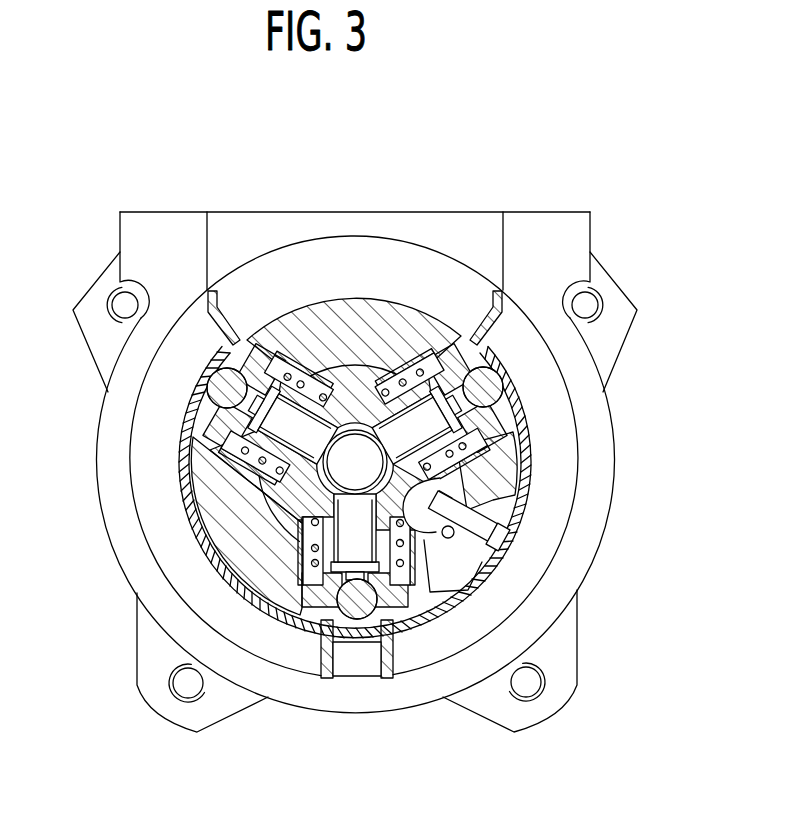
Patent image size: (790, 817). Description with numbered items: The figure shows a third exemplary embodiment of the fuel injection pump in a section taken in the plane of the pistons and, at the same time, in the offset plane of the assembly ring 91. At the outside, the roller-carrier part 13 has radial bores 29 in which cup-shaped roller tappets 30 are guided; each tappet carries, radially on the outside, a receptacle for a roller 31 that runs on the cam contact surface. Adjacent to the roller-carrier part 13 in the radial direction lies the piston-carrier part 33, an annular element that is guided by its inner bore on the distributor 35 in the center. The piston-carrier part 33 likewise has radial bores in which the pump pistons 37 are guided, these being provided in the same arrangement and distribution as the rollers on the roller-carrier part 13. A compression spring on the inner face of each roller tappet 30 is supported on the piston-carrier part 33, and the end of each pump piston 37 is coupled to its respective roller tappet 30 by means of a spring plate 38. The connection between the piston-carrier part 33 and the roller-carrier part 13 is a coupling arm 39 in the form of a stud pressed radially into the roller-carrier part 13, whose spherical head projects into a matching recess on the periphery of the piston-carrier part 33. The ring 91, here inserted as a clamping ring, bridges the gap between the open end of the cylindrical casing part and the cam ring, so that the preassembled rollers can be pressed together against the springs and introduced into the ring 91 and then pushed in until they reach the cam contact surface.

The roller-carrier part 13 is at (200, 468).
The radial bores 29 is at (238, 342).
The cup-shaped roller tappets 30 is at (312, 600).
The roller 31 is at (503, 391).
The piston-carrier part 33 is at (355, 387).
The distributor 35 is at (343, 470).
The pump pistons 37 is at (418, 427).
The spring plate 38 is at (393, 600).
The coupling arm 39 is at (513, 538).
The ring 91 is at (205, 546).